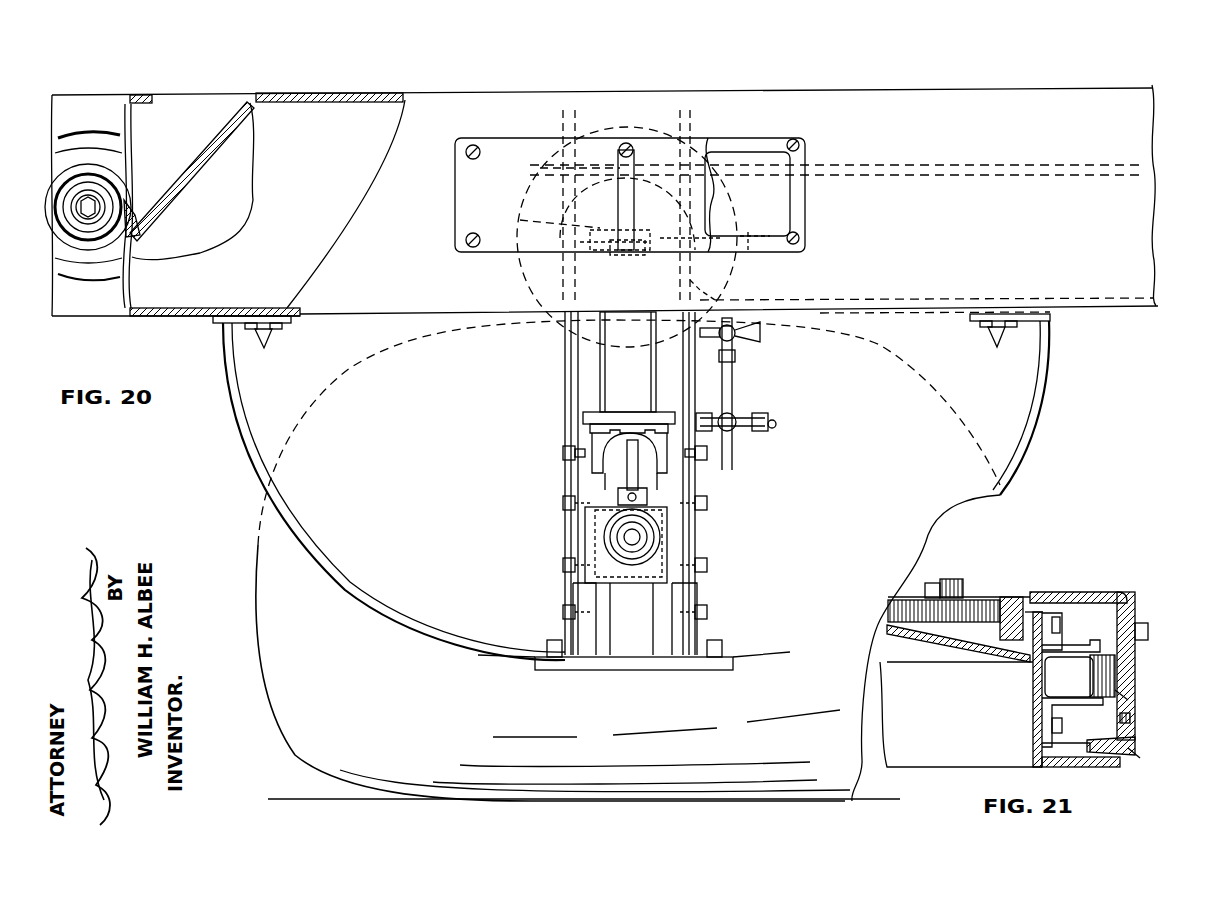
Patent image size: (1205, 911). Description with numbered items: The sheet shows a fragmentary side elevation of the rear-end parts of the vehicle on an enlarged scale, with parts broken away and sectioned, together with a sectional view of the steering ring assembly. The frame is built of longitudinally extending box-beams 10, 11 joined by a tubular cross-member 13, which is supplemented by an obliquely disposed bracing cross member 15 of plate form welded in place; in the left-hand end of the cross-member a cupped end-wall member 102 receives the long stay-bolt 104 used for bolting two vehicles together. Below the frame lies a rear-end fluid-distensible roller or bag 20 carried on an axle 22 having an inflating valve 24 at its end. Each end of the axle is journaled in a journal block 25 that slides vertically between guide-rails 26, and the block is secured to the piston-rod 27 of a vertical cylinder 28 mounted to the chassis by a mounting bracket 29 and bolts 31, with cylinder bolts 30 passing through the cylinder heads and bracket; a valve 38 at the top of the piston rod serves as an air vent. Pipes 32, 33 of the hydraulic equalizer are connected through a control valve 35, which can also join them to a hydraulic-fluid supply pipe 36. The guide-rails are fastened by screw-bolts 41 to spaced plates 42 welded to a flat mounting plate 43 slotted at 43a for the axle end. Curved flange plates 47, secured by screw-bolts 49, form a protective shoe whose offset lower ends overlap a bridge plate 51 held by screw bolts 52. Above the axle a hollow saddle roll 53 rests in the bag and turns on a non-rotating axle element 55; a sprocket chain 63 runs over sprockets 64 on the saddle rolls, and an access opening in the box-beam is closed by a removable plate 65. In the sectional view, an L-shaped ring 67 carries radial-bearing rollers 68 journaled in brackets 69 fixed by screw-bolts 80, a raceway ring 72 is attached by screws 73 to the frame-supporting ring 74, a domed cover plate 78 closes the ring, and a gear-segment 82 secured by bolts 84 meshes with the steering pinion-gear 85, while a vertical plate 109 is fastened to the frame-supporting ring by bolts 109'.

In FIG. 20, the box-beam 10 is at (1120, 92).
In FIG. 20, the box-beam 11 is at (192, 100).
In FIG. 20, the tubular cross-member 13 is at (140, 205).
In FIG. 20, the bracing cross member 15 is at (195, 160).
In FIG. 20, the rear-end fluid-distensible roller (bag) 20 is at (258, 632).
In FIG. 20, the axle 22 is at (650, 545).
In FIG. 20, the inflating valve 24 is at (640, 535).
In FIG. 20, the journal block 25 is at (678, 598).
In FIG. 20, the guide-rails 26 is at (588, 595).
In FIG. 20, the piston-rod 27 is at (555, 170).
In FIG. 20, the vertical cylinder 28 is at (648, 402).
In FIG. 20, the mounting bracket 29 is at (582, 436).
In FIG. 20, the cylinder bolts 30 is at (600, 374).
In FIG. 20, the bolts 31 is at (563, 455).
In FIG. 20, the pipe 32 is at (790, 248).
In FIG. 20, the pipe 33 is at (774, 428).
In FIG. 20, the control valve 35 is at (762, 333).
In FIG. 20, the hydraulic-fluid supply pipe 36 is at (712, 340).
In FIG. 20, the valve 38 is at (634, 145).
In FIG. 20, the screw-bolts 41 is at (563, 504).
In FIG. 20, the spaced plates 42 is at (576, 534).
In FIG. 20, the flat mounting plate 43 is at (1015, 398).
In FIG. 20, the vertical slot 43a is at (612, 473).
In FIG. 20, the curved flange plates 47 is at (232, 426).
In FIG. 20, the screw-bolts 49 is at (631, 342).
In FIG. 20, the bridge plate 51 is at (640, 670).
In FIG. 20, the screw bolts 52 is at (550, 645).
In FIG. 20, the saddle roll 53 is at (516, 271).
In FIG. 20, the axle element 55 is at (608, 228).
In FIG. 20, the sprocket chain 63 is at (904, 166).
In FIG. 20, the sprockets 64 is at (722, 290).
In FIG. 20, the removable plate 65 is at (516, 145).
In FIG. 21, the ring 67 is at (1118, 762).
In FIG. 21, the radial-bearing rollers 68 is at (1128, 698).
In FIG. 21, the brackets 69 is at (1100, 650).
In FIG. 21, the raceway ring 72 is at (1140, 754).
In FIG. 21, the screws 73 is at (1132, 722).
In FIG. 21, the frame-supporting ring 74 is at (1118, 668).
In FIG. 21, the domed cover plate 78 is at (940, 640).
In FIG. 21, the screw-bolts 80 is at (1062, 728).
In FIG. 21, the gear-segment 82 is at (1008, 604).
In FIG. 21, the bolts 84 is at (1060, 626).
In FIG. 21, the pinion-gear 85 is at (912, 608).
In FIG. 20, the end-wall member 102 is at (90, 240).
In FIG. 20, the stay-bolt 104 is at (95, 210).
In FIG. 21, the vertical plate 109 is at (1148, 655).
In FIG. 21, the bolts 109' is at (1161, 620).